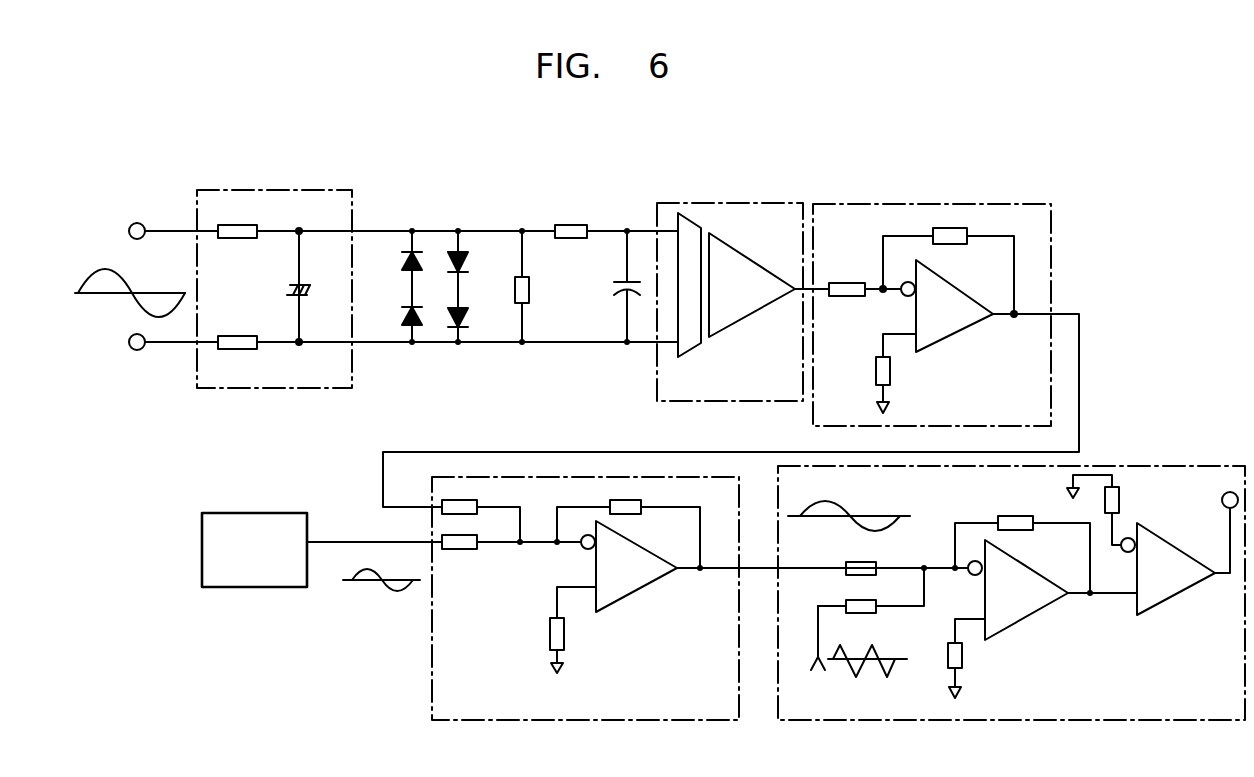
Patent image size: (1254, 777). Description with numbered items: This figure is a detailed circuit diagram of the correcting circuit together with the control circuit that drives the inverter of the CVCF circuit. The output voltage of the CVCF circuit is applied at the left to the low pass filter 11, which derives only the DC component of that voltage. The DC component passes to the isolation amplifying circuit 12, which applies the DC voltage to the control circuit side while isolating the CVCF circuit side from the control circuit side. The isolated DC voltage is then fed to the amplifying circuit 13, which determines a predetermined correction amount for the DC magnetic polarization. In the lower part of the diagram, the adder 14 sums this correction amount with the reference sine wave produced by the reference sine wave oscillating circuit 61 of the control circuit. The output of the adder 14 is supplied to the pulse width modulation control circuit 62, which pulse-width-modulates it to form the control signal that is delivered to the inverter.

The low pass filter 11 is at (273, 190).
The isolation amplifying circuit 12 is at (737, 203).
The amplifying circuit 13 is at (950, 204).
The adder 14 is at (430, 608).
The reference sine wave oscillating circuit 61 is at (232, 587).
The pulse width modulation control circuit 62 is at (1122, 466).